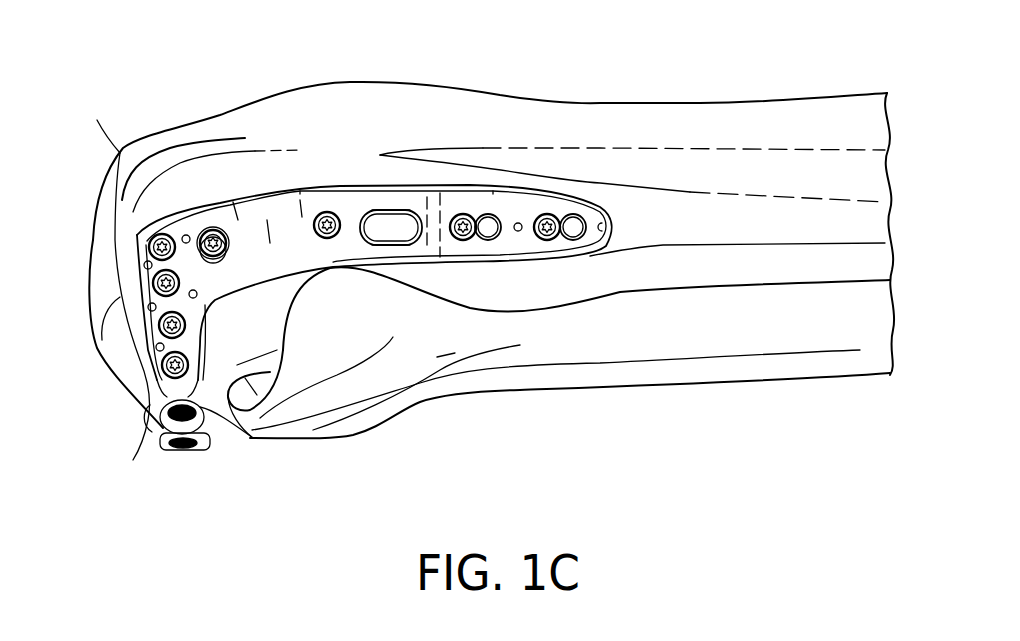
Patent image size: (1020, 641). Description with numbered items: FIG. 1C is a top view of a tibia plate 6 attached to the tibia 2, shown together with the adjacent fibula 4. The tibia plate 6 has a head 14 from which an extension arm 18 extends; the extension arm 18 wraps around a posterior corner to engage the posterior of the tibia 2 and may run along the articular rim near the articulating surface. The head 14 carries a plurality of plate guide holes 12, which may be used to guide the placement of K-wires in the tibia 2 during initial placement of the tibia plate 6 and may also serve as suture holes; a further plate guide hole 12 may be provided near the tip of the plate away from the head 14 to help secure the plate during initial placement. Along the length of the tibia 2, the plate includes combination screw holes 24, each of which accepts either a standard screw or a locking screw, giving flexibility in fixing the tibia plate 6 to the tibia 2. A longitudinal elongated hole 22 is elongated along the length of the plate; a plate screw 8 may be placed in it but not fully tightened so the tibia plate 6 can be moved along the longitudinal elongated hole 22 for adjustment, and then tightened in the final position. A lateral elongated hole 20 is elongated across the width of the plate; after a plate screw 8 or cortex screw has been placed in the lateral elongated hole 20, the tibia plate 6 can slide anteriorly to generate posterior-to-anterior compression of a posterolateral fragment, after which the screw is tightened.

The tibia 2 is at (733, 128).
The fibula 4 is at (708, 337).
The tibia plate 6 is at (358, 247).
The plate screw 8 is at (230, 238).
The plate guide hole 12 is at (186, 237).
The head 14 is at (92, 121).
The extension arm 18 is at (153, 437).
The lateral elongated hole 20 is at (213, 240).
The longitudinal elongated hole 22 is at (390, 222).
The combination screw hole 24 is at (573, 222).